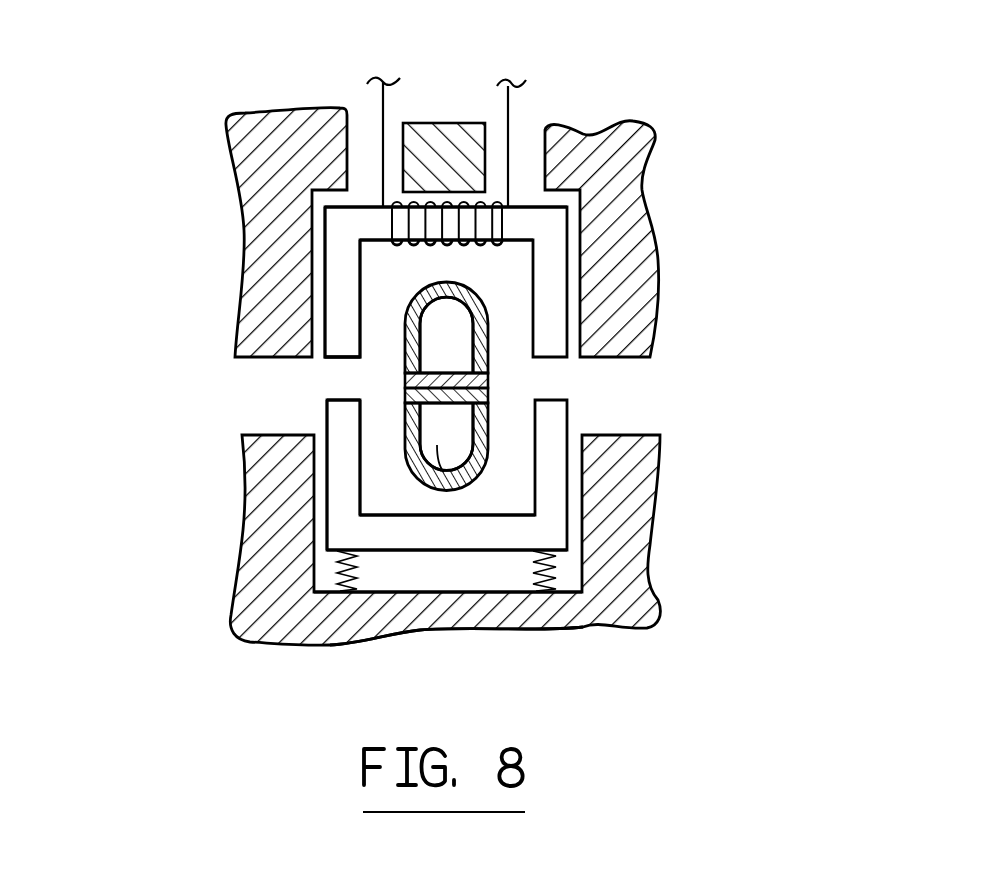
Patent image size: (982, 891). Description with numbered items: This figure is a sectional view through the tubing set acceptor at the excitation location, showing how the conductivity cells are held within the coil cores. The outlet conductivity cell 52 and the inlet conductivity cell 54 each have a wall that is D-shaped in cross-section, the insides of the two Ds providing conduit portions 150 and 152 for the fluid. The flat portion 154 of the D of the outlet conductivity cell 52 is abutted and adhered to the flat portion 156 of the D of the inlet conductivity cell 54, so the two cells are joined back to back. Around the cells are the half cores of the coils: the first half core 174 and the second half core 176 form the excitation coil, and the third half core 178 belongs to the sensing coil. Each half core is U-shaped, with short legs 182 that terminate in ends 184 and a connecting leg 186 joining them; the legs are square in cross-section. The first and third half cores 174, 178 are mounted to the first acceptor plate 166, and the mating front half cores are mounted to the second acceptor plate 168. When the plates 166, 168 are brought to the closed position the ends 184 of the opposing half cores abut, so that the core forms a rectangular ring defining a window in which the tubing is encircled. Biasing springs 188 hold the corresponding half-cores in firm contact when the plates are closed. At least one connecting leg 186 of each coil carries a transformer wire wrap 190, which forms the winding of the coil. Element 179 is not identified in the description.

The outlet conductivity cell 52 is at (487, 473).
The inlet conductivity cell 54 is at (490, 350).
The conduit portion 150 is at (585, 622).
The conduit portion 152 is at (447, 332).
The flat portion 154 is at (483, 408).
The flat portion 156 is at (490, 374).
The first acceptor plate 166 is at (245, 425).
The second acceptor plate 168 is at (243, 371).
The first half core 174 is at (311, 528).
The second half core 176 is at (306, 318).
The third half core 178 is at (470, 447).
The upper right pole block 179 is at (578, 236).
The short legs 182 is at (339, 274).
The ends 184 is at (340, 402).
The connecting legs 186 is at (360, 222).
The biasing springs 188 is at (560, 565).
The transformer wire wrap 190 is at (500, 228).